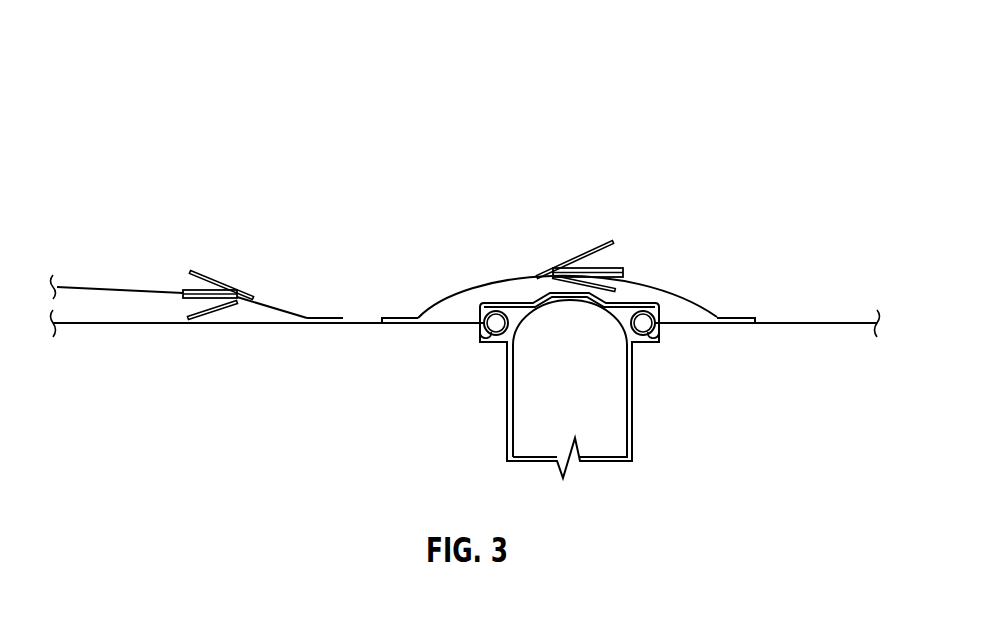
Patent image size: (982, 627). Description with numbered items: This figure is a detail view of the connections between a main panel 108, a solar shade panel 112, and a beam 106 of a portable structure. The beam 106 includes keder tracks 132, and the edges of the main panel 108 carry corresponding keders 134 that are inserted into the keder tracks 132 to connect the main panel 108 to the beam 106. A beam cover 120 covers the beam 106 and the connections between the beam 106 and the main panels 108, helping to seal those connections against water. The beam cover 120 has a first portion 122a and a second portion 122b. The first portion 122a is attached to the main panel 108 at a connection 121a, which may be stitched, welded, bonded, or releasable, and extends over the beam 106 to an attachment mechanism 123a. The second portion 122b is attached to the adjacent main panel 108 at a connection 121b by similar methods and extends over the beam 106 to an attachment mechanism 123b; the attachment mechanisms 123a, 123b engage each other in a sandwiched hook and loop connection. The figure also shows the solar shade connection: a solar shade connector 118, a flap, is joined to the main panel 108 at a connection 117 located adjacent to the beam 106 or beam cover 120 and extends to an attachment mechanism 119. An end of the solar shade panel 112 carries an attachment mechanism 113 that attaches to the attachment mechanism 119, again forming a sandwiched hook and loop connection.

The beam 106 is at (628, 413).
The main panel 108 is at (372, 318).
The solar shade panel 112 is at (60, 287).
The attachment mechanism 113 is at (187, 290).
The connection 117 is at (327, 317).
The solar shade connector 118 is at (271, 308).
The attachment mechanism 119 is at (210, 273).
The beam cover 120 is at (172, 100).
The connection 121a is at (750, 318).
The connection 121b is at (393, 319).
The first portion 122a is at (632, 271).
The second portion 122b is at (490, 294).
The attachment mechanism 123a is at (616, 264).
The attachment mechanism 123b is at (578, 246).
The keder track 132 is at (490, 338).
The keder 134 is at (485, 335).